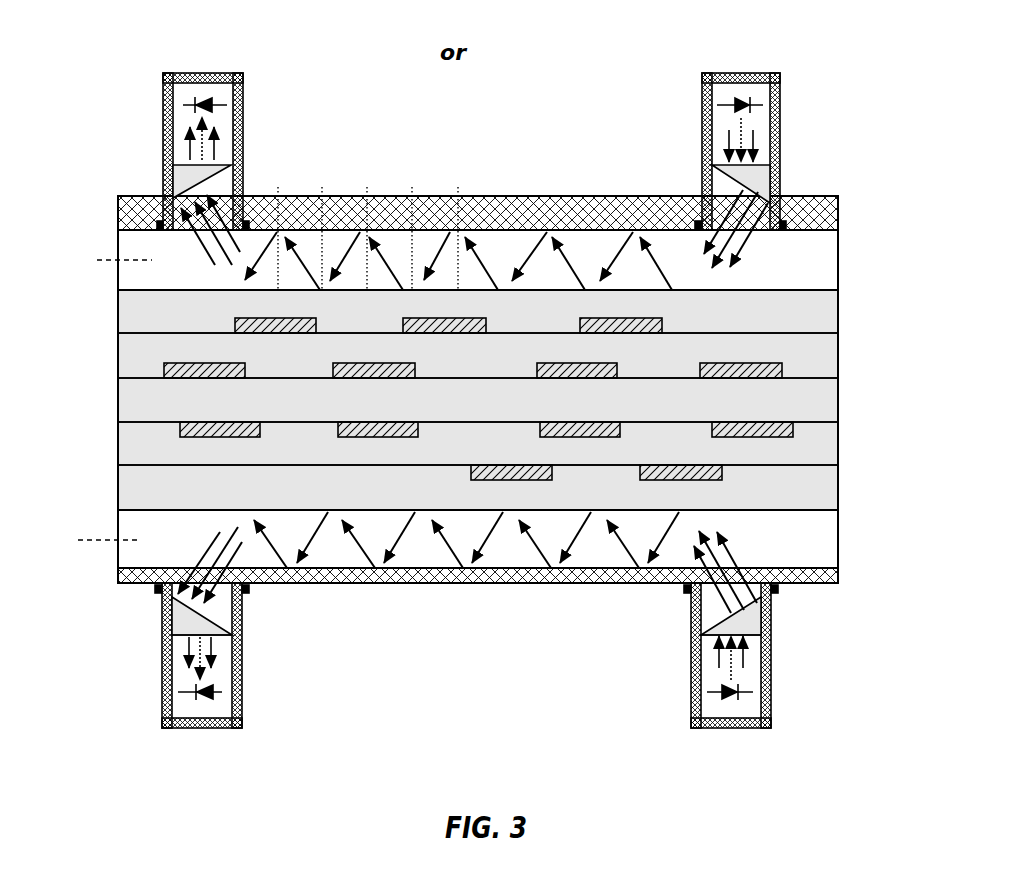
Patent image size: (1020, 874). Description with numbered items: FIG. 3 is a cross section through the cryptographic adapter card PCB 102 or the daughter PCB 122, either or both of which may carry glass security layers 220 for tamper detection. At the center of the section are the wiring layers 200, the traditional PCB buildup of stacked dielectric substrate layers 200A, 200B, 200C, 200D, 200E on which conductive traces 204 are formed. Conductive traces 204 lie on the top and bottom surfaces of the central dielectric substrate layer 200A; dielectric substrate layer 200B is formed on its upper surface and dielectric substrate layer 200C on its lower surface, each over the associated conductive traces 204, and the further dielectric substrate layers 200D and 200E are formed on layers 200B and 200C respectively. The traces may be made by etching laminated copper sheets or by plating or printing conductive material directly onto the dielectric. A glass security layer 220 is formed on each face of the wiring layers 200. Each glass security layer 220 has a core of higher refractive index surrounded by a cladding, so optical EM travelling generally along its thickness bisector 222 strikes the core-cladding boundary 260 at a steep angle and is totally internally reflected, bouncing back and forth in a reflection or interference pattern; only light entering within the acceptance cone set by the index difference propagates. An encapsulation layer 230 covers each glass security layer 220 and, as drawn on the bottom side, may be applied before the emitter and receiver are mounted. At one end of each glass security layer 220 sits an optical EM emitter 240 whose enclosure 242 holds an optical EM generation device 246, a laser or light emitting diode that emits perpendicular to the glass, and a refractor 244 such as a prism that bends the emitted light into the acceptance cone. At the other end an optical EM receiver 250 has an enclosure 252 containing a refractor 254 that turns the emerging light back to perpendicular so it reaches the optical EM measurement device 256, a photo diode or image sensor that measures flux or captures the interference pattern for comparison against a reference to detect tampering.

The cryptographic adapter card PCB 102 is at (417, 52).
The daughter PCB 122 is at (487, 52).
The wiring layers 200 is at (454, 361).
The dielectric substrate layer 200A is at (128, 400).
The dielectric substrate layer 200B is at (128, 357).
The dielectric substrate layer 200C is at (128, 445).
The dielectric substrate layer 200D is at (128, 313).
The dielectric substrate layer 200E is at (128, 490).
The conductive traces 204 is at (770, 362).
The glass security layer 220 is at (822, 262).
The thickness bisector 222 is at (99, 260).
The encapsulation layer 230 is at (565, 210).
The optical EM emitter 240 is at (737, 400).
The enclosure 242 is at (788, 92).
The refractor 244 is at (758, 178).
The optical EM generation device 246 is at (783, 127).
The optical EM receiver 250 is at (193, 403).
The enclosure 252 is at (157, 97).
The refractor 254 is at (185, 178).
The optical EM measurement device 256 is at (172, 128).
The boundary 260 is at (280, 184).